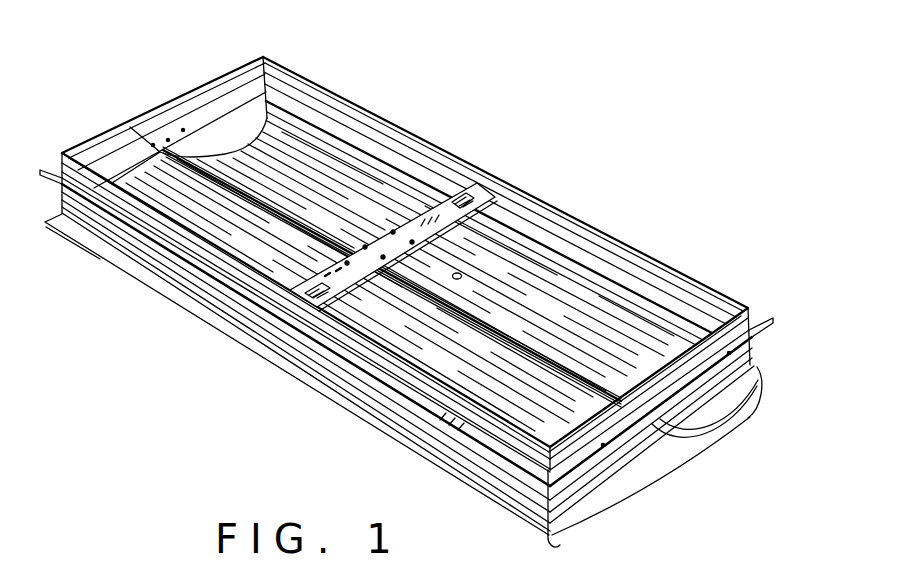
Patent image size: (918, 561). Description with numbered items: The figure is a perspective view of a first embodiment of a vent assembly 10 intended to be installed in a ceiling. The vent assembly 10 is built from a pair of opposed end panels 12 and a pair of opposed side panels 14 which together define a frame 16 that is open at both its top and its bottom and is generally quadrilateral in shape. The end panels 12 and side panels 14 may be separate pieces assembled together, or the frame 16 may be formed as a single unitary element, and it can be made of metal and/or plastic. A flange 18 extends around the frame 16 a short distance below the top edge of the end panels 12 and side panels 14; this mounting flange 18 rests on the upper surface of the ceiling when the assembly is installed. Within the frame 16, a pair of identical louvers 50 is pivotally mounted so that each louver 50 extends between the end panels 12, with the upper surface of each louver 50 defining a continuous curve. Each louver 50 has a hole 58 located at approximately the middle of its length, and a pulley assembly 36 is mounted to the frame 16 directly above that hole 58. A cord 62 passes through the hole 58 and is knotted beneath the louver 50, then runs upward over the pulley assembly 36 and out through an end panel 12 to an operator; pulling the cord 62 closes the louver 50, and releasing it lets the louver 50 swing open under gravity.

The vent assembly 10 is at (415, 280).
The end panels 12 is at (210, 80).
The side panels 14 is at (53, 224).
The frame 16 is at (328, 88).
The flange 18 is at (763, 320).
The pulley assembly 36 is at (423, 213).
The louvers 50 is at (416, 336).
The hole 58 is at (462, 276).
The cord 62 is at (171, 155).